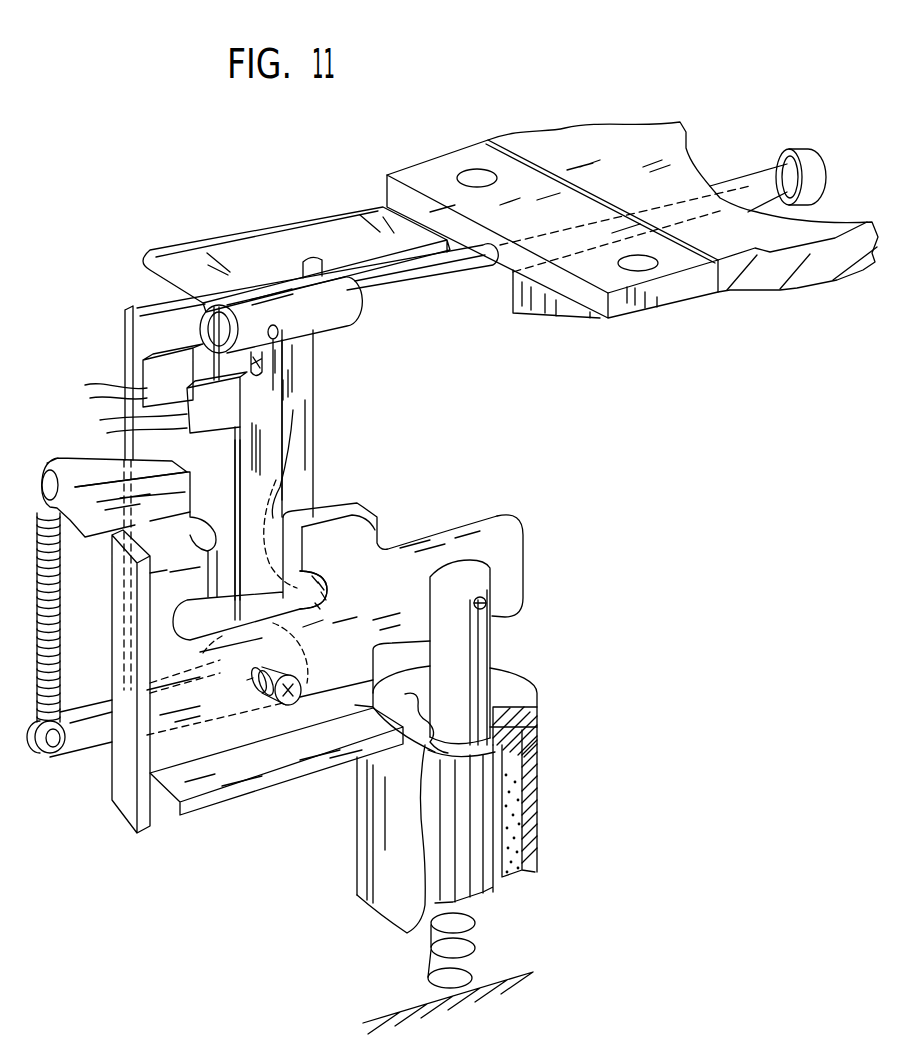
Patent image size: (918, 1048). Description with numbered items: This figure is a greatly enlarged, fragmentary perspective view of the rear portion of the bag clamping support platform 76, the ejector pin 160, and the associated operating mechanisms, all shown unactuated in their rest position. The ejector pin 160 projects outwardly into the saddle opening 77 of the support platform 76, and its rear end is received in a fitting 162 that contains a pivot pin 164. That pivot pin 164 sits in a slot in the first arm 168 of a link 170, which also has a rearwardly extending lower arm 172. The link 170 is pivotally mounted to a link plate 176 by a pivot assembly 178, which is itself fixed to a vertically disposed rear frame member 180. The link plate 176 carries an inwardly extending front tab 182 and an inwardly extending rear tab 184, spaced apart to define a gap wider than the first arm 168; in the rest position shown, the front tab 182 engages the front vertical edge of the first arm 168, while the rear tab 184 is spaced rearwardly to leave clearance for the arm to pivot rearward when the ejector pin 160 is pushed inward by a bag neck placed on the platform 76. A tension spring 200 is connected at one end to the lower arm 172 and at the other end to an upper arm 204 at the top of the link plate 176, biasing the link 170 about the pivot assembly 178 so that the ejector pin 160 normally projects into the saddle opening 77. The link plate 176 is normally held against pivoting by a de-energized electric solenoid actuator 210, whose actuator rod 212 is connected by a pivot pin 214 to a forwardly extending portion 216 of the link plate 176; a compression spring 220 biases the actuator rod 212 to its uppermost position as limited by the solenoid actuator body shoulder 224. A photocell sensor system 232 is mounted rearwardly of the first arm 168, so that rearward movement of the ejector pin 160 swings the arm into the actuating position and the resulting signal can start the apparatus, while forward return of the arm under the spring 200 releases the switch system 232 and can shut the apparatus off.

The support platform 76 is at (630, 147).
The saddle opening 77 is at (690, 151).
The ejector pin 160 is at (752, 182).
The fitting 162 is at (345, 325).
The pivot pin 164 is at (300, 345).
The first arm 168 is at (263, 437).
The link 170 is at (298, 500).
The lower arm 172 is at (85, 735).
The link plate 176 is at (451, 515).
The pivot assembly 178 is at (288, 700).
The rear frame member 180 is at (120, 330).
The front tab 182 is at (330, 588).
The rear tab 184 is at (254, 487).
The tension spring 200 is at (37, 512).
The upper arm 204 is at (112, 403).
The solenoid actuator 210 is at (545, 797).
The actuator rod 212 is at (473, 647).
The pivot pin 214 is at (487, 603).
The forwardly extending portion 216 is at (503, 540).
The compression spring 220 is at (477, 915).
The solenoid actuator body shoulder 224 is at (530, 733).
The photocell sensor system 232 is at (200, 372).